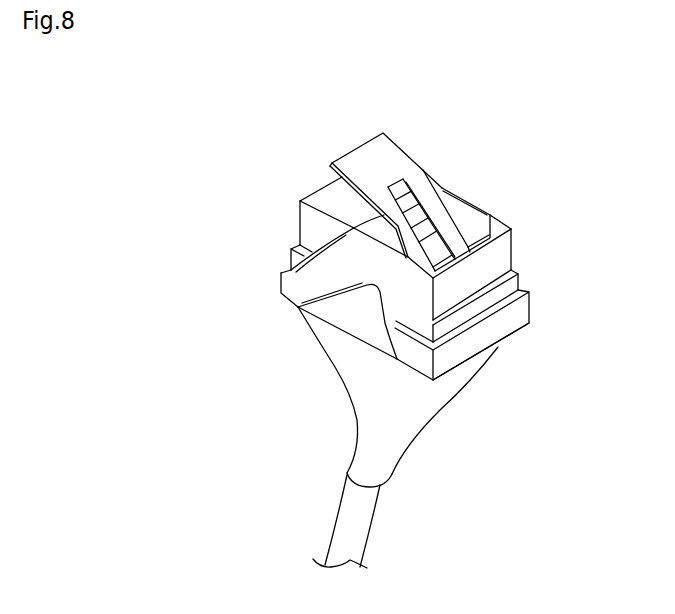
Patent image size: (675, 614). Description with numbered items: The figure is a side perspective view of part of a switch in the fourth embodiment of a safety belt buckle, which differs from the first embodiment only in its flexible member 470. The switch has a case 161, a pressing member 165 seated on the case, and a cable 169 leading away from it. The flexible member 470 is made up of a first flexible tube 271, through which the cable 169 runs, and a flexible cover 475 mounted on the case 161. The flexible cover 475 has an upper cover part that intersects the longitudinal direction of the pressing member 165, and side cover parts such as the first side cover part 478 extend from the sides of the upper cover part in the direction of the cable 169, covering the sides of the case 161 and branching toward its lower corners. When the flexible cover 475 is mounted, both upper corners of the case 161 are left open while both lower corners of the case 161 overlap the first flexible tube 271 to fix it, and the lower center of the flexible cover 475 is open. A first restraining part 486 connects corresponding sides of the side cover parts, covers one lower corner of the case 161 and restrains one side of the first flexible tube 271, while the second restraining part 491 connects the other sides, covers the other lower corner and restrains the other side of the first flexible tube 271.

The pressing member 165 is at (373, 152).
The case 161 is at (503, 251).
The flexible cover 475 is at (532, 290).
The second restraining part 491 is at (523, 313).
The flexible member 470 is at (528, 350).
The first restraining part 486 is at (282, 273).
The first side cover part 478 is at (298, 307).
The first flexible tube 271 is at (425, 404).
The cable 169 is at (354, 521).